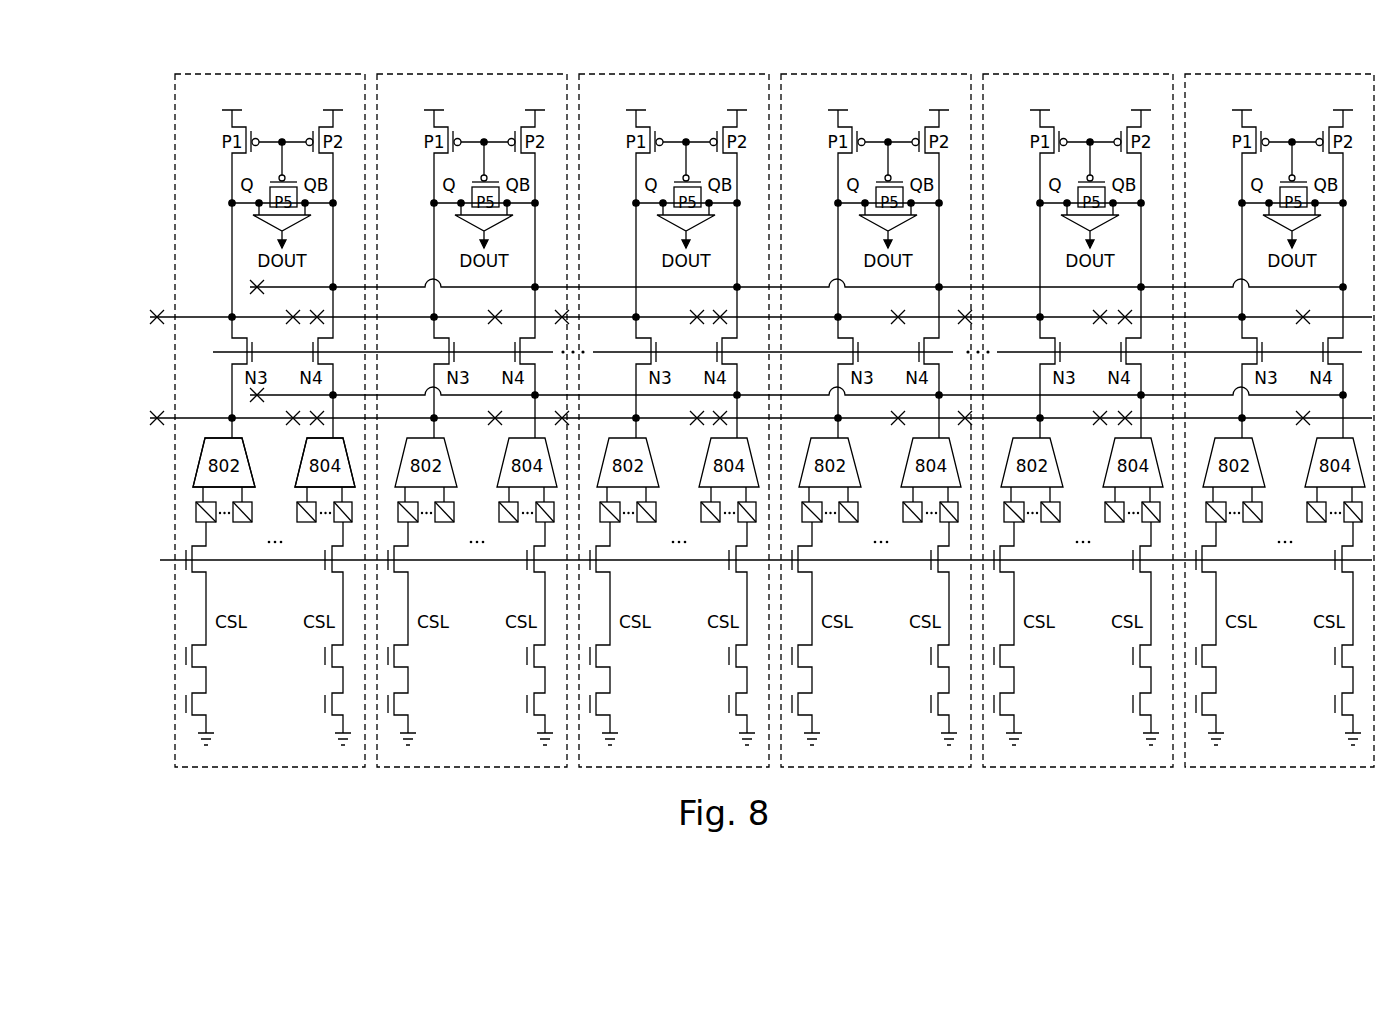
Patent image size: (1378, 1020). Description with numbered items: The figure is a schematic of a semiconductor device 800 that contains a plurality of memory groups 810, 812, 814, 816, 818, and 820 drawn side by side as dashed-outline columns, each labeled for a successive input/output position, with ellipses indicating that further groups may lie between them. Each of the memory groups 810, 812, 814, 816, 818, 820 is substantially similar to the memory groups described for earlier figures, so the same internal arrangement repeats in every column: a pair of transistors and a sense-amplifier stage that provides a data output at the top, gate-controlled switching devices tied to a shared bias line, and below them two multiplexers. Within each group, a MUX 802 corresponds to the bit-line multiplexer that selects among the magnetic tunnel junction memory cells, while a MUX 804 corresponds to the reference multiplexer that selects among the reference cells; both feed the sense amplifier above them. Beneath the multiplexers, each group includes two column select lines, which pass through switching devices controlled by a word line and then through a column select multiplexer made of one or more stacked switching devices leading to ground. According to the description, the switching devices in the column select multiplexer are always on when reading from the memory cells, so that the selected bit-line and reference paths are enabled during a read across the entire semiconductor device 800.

The semiconductor device 800 is at (168, 31).
The MUX 802 is at (224, 462).
The MUX 804 is at (325, 462).
The memory group 810 is at (232, 73).
The memory group 812 is at (434, 73).
The memory group 814 is at (636, 73).
The memory group 816 is at (838, 73).
The memory group 818 is at (1040, 73).
The memory group 820 is at (1242, 73).